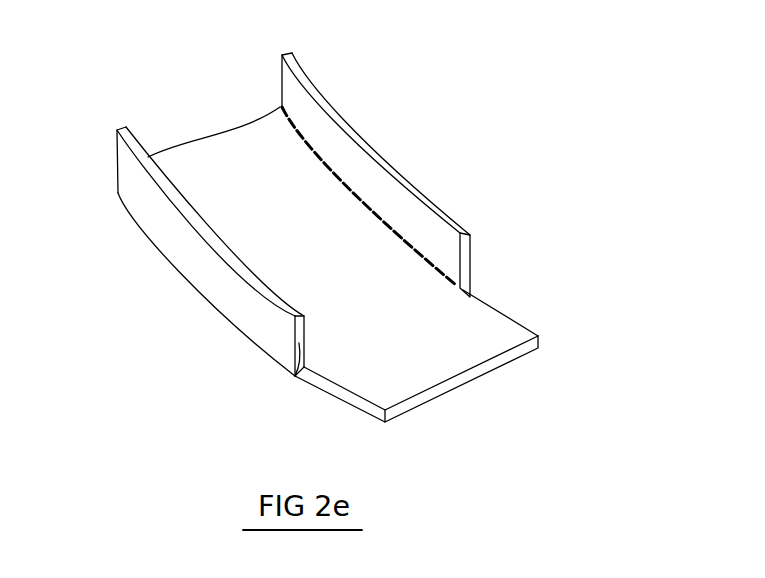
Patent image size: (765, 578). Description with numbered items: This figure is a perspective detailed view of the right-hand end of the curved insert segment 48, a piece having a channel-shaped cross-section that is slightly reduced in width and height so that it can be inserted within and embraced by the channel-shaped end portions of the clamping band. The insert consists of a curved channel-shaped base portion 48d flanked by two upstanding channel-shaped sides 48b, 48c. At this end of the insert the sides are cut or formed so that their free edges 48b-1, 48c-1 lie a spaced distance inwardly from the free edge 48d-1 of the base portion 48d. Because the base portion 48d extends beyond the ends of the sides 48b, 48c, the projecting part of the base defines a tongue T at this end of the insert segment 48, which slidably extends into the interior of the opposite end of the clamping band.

The curved insert segment 48 is at (204, 112).
The channel-shaped side 48b is at (188, 255).
The free edge of side 48b-1 is at (295, 378).
The channel-shaped side 48c is at (379, 164).
The free edge of side 48c-1 is at (463, 258).
The channel-shaped base portion 48d is at (327, 252).
The free edge of base portion 48d-1 is at (453, 350).
The tongue T is at (403, 366).